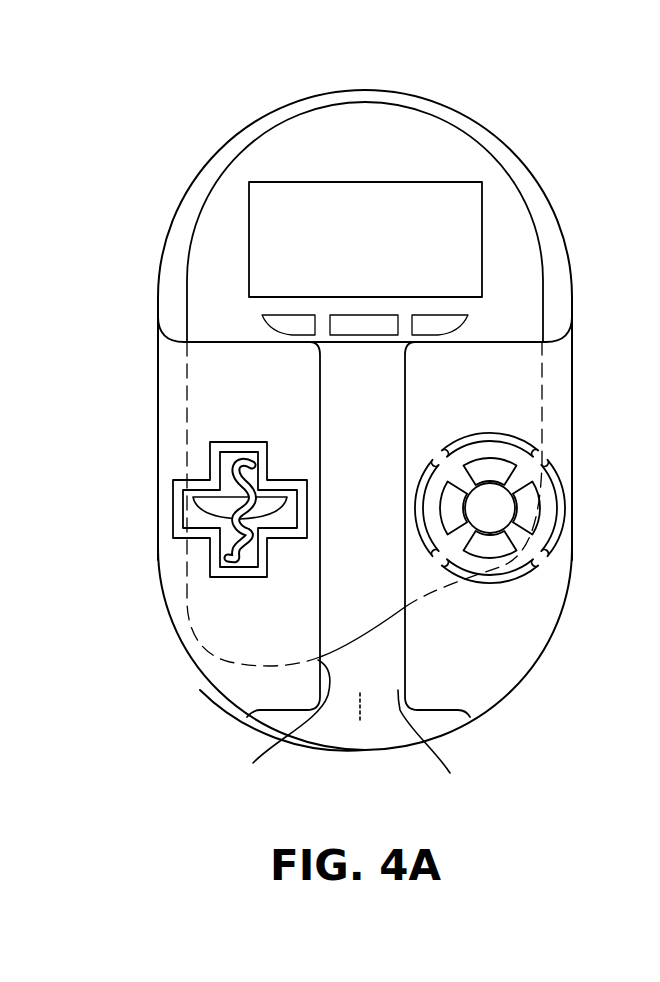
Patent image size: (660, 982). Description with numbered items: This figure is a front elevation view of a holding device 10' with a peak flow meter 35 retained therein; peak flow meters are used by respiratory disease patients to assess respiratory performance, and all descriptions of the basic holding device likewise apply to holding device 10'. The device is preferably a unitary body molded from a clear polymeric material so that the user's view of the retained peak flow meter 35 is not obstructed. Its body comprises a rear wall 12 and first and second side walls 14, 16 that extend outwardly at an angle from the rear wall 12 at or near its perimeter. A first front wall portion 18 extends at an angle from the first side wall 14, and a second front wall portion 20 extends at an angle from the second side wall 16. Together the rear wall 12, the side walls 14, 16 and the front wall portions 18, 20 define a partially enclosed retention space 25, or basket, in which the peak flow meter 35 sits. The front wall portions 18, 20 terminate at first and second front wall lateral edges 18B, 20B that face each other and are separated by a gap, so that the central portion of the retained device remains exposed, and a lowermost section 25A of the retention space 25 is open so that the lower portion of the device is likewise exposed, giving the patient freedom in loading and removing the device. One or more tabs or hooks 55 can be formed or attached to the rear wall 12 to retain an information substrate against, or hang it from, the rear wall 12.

The holding device 10' is at (89, 140).
The rear wall 12 is at (237, 135).
The peak flow meter 35 is at (323, 105).
The retention space 25 is at (174, 312).
The first side wall 14 is at (156, 400).
The second side wall 16 is at (572, 395).
The first front wall portion 18 is at (182, 577).
The second front wall portion 20 is at (490, 663).
The lowermost section of retention space 25A is at (277, 723).
The first front wall lateral edge 18B is at (275, 728).
The second front wall lateral edge 20B is at (450, 743).
The tab or hook 55 is at (362, 700).